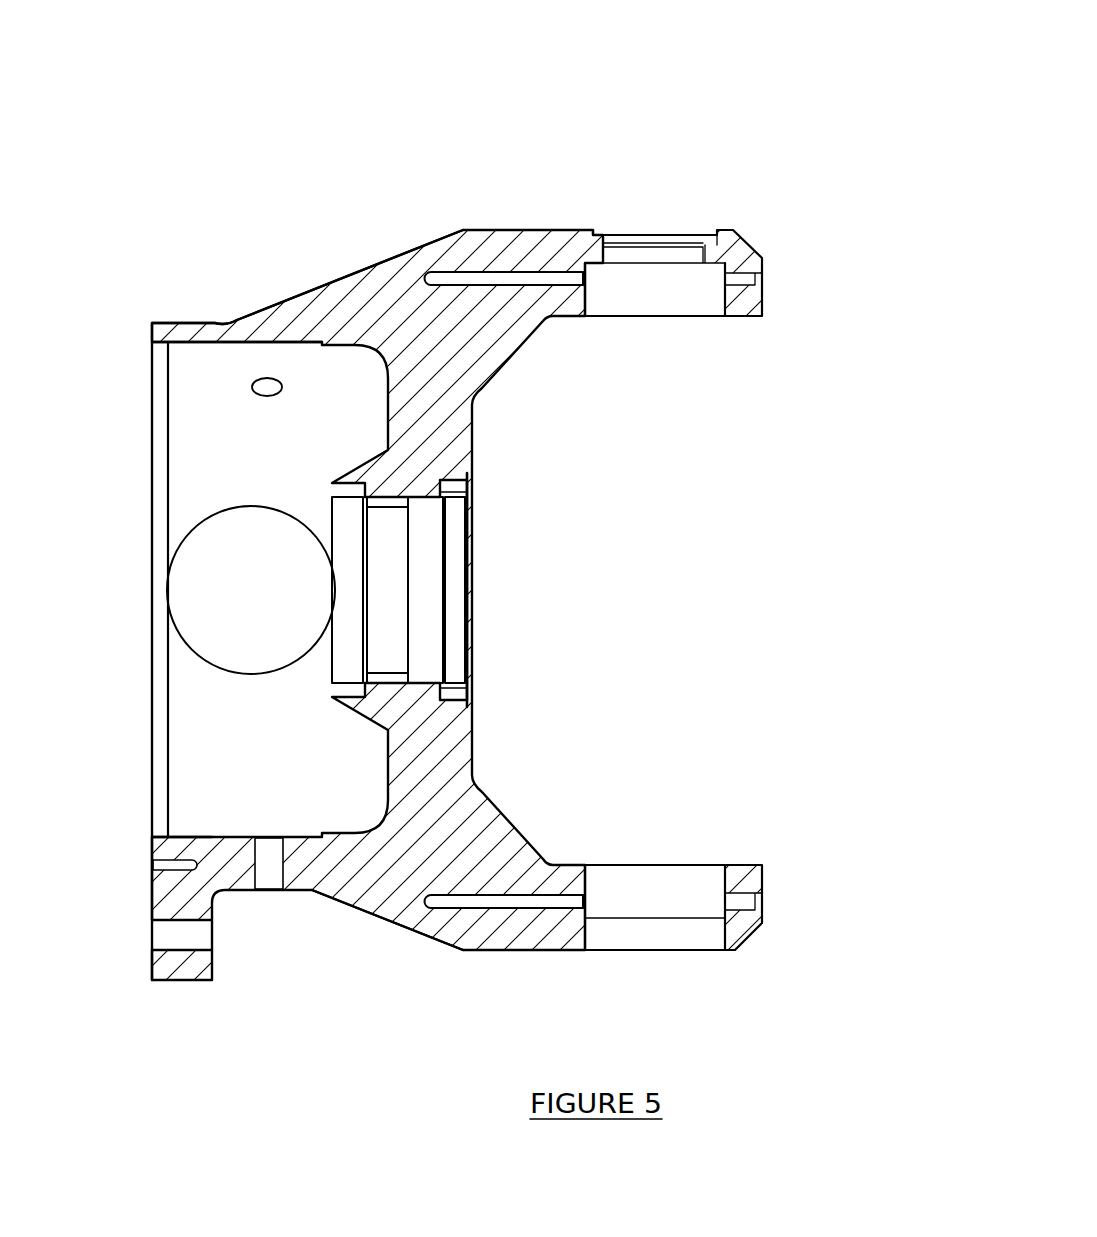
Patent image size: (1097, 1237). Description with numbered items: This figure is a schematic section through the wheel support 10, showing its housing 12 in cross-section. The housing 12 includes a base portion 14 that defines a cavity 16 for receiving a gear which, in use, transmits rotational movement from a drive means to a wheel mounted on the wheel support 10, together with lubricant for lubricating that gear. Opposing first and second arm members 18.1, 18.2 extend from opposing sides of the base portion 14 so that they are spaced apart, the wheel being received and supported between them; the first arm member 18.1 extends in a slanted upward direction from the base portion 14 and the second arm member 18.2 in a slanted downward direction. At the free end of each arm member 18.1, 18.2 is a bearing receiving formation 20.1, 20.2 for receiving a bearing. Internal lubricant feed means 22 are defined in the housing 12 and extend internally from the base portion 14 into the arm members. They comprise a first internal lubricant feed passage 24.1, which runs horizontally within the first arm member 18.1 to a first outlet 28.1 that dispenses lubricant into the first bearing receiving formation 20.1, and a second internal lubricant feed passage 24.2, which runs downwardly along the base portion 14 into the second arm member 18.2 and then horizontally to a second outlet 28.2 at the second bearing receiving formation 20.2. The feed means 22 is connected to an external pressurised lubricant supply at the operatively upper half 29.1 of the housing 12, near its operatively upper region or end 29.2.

The wheel support 10 is at (762, 104).
The housing 12 is at (175, 293).
The base portion 14 is at (372, 264).
The cavity 16 is at (242, 450).
The first arm member 18.1 is at (555, 228).
The second arm member 18.2 is at (747, 942).
The first bearing receiving formation 20.1 is at (675, 315).
The second bearing receiving formation 20.2 is at (674, 866).
The internal lubricant feed means 22 is at (408, 224).
The first internal lubricant feed passage 24.1 is at (525, 270).
The second internal lubricant feed passage 24.2 is at (505, 905).
The first outlet 28.1 is at (585, 280).
The second outlet 28.2 is at (583, 900).
The operatively upper half 29.1 is at (655, 484).
The operatively upper region or end 29.2 is at (790, 203).